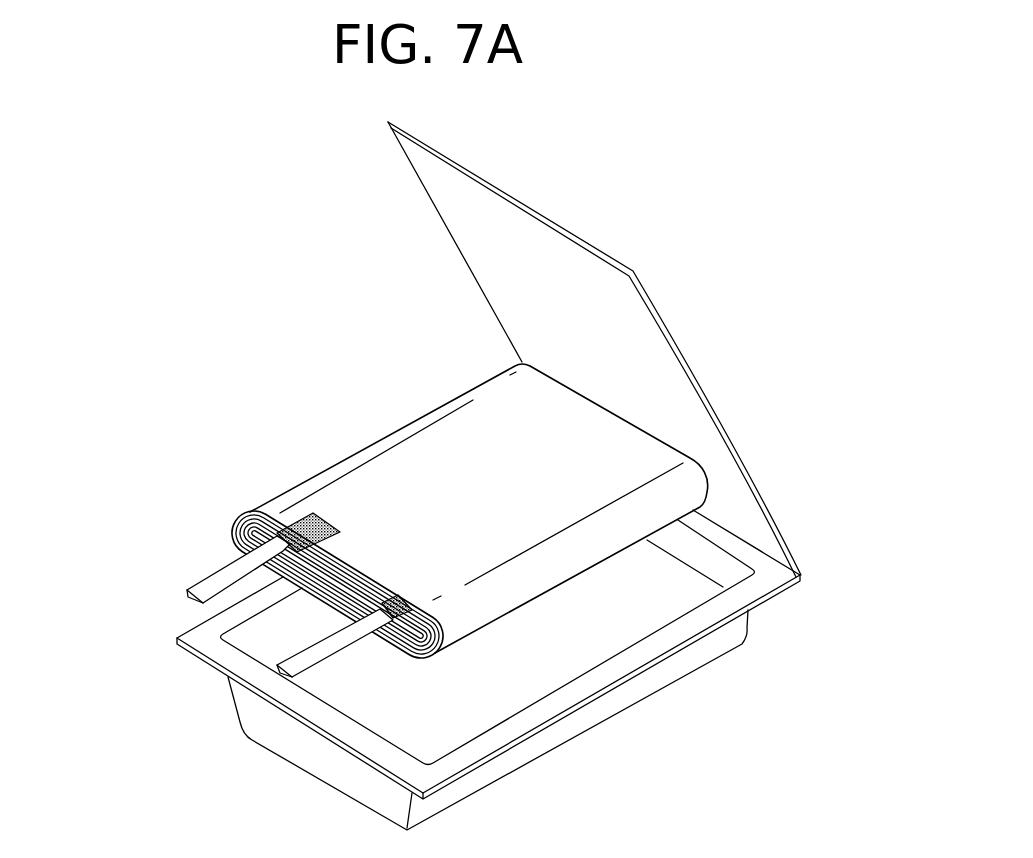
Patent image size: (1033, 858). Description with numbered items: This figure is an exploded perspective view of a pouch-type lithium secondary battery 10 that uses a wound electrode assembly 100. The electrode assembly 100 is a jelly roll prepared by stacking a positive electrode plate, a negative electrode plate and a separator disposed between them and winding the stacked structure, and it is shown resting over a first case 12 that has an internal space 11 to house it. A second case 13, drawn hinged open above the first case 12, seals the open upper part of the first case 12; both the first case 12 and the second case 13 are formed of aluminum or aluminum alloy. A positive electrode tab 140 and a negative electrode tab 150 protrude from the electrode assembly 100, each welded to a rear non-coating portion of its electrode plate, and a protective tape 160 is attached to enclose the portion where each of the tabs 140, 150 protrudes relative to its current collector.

The secondary battery 10 is at (102, 170).
The electrode assembly 100 is at (380, 434).
The internal space 11 is at (550, 695).
The first case 12 is at (680, 662).
The second case 13 is at (694, 403).
The positive electrode tab 140 is at (197, 583).
The negative electrode tab 150 is at (279, 658).
The protective tape 160 is at (296, 520).